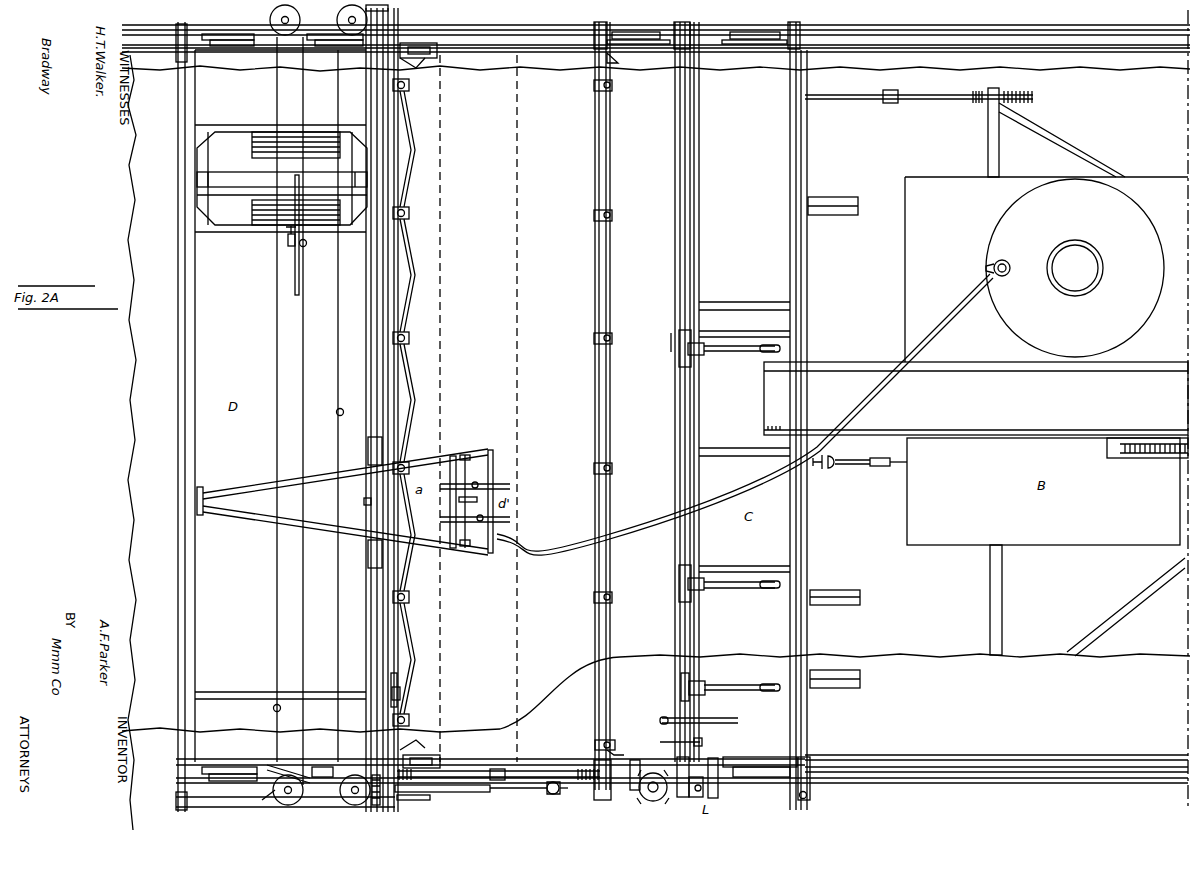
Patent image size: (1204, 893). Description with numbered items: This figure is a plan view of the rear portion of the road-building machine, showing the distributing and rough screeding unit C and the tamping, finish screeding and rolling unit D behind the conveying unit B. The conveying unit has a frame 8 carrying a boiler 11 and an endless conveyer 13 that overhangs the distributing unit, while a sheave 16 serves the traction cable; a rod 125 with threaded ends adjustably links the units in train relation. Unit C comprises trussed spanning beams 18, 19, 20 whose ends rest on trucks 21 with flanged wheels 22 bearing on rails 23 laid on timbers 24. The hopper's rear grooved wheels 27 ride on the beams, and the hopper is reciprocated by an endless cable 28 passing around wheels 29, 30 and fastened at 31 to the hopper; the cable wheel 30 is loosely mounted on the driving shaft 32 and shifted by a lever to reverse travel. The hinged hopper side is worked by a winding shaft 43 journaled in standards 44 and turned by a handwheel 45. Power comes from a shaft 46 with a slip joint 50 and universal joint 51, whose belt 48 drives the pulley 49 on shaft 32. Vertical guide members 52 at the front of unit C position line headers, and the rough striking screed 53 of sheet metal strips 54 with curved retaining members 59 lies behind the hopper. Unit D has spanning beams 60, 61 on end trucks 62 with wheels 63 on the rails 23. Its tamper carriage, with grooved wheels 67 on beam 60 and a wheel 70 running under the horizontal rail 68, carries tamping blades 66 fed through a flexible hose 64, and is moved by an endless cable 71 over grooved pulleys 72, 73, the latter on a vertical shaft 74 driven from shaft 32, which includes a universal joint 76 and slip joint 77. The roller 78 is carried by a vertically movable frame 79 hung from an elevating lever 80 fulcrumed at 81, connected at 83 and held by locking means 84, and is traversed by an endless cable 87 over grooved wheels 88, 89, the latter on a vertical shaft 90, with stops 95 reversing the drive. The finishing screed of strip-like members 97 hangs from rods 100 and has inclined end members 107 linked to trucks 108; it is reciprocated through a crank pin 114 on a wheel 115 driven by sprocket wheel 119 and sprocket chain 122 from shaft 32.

The frame 8 is at (1097, 540).
The boiler 11 is at (1006, 317).
The endless conveyer 13 is at (976, 398).
The sheave 16 is at (320, 700).
The trussed spanning beam 18 is at (787, 195).
The trussed spanning beam 19 is at (690, 218).
The trussed spanning beam 20 is at (595, 258).
The truck 21 is at (705, 32).
The flanged wheel 22 is at (650, 50).
The rail 23 is at (905, 765).
The timber 24 is at (869, 762).
The grooved wheel 27 is at (704, 570).
The endless cable 28 is at (678, 568).
The wheel 29 is at (677, 341).
The cable wheel 30 is at (656, 800).
The cable fastening 31 is at (675, 743).
The driving shaft 32 is at (610, 800).
The winding shaft 43 is at (700, 642).
The standard 44 is at (704, 590).
The handwheel 45 is at (738, 722).
The shaft 46 is at (853, 474).
The belt 48 is at (808, 755).
The pulley 49 is at (808, 797).
The slip or extension joint 50 is at (890, 470).
The universal joint 51 is at (830, 469).
The vertical guide member 52 is at (836, 593).
The rough striking screed 53 is at (610, 428).
The sheet metal strip 54 is at (612, 450).
The retaining member 59 is at (614, 750).
The spanning beam 60 is at (370, 340).
The spanning beam 61 is at (178, 400).
The end truck 62 is at (262, 48).
The wheel 63 is at (236, 48).
The flexible hose 64 is at (548, 540).
The tamping blade 66 is at (510, 500).
The grooved wheel 67 is at (368, 445).
The horizontal rail 68 is at (195, 556).
The wheel 70 is at (203, 492).
The endless cable 71 is at (366, 635).
The grooved pulley 72 is at (339, 14).
The grooved pulley 73 is at (345, 766).
The vertical shaft 74 is at (342, 798).
The universal joint 76 is at (556, 795).
The slip joint 77 is at (468, 792).
The roller 78 is at (263, 212).
The vertically movable frame 79 is at (230, 232).
The elevating lever 80 is at (294, 268).
The fulcrum 81 is at (306, 238).
The connection 83 is at (290, 172).
The locking means 84 is at (288, 244).
The endless cable 87 is at (279, 637).
The grooved wheel 88 is at (272, 14).
The grooved wheel 89 is at (289, 796).
The vertical shaft 90 is at (270, 800).
The stop 95 is at (376, 287).
The strip-like member 97 is at (400, 368).
The rod 100 is at (405, 338).
The inclined member 107 is at (424, 70).
The truck 108 is at (425, 45).
The crank pin 114 is at (400, 698).
The wheel 115 is at (398, 688).
The sprocket wheel 119 is at (404, 800).
The sprocket chain 122 is at (372, 798).
The rod 125 is at (538, 772).